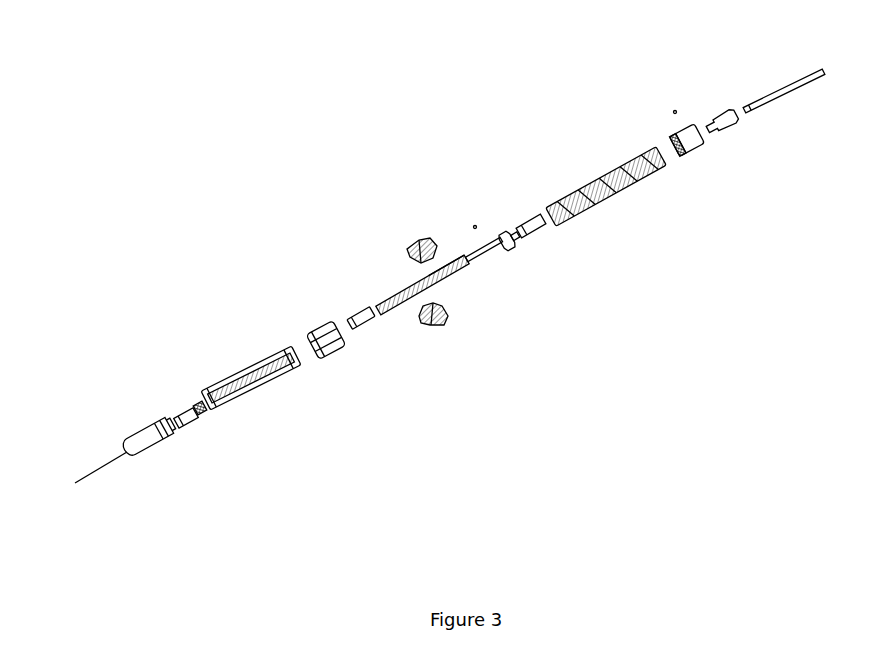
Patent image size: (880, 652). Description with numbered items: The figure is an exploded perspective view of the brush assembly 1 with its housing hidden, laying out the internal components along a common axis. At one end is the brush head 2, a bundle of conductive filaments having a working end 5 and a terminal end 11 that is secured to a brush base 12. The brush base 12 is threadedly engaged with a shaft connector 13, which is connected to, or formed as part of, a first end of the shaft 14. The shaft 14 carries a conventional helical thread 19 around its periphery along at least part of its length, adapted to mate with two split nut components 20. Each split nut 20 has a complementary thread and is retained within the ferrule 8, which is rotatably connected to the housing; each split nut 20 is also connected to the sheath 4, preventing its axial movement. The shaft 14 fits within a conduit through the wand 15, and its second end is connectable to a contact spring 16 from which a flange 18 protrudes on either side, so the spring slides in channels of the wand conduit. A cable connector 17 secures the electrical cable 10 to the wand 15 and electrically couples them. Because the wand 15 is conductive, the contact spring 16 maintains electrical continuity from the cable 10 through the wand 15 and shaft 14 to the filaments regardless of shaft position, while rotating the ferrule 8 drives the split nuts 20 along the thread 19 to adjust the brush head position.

The brush assembly 1 is at (348, 121).
The brush head 2 is at (153, 433).
The sheath 4 is at (237, 380).
The working end 5 is at (86, 474).
The ferrule 8 is at (323, 320).
The electrical cable 10 is at (783, 100).
The terminal end 11 is at (163, 420).
The brush base 12 is at (190, 423).
The shaft connector 13 is at (358, 312).
The shaft 14 is at (408, 307).
The wand 15 is at (618, 200).
The contact spring 16 is at (528, 217).
The cable connector 17 is at (690, 130).
The flange 18 is at (543, 225).
The helical thread 19 is at (453, 278).
The split nut components 20 is at (417, 238).